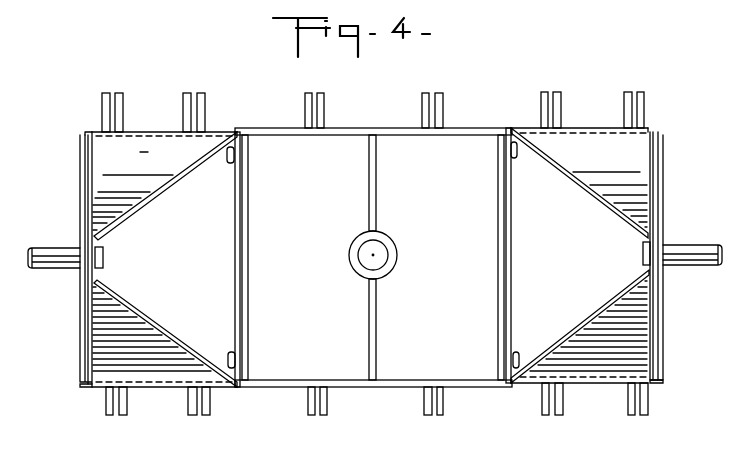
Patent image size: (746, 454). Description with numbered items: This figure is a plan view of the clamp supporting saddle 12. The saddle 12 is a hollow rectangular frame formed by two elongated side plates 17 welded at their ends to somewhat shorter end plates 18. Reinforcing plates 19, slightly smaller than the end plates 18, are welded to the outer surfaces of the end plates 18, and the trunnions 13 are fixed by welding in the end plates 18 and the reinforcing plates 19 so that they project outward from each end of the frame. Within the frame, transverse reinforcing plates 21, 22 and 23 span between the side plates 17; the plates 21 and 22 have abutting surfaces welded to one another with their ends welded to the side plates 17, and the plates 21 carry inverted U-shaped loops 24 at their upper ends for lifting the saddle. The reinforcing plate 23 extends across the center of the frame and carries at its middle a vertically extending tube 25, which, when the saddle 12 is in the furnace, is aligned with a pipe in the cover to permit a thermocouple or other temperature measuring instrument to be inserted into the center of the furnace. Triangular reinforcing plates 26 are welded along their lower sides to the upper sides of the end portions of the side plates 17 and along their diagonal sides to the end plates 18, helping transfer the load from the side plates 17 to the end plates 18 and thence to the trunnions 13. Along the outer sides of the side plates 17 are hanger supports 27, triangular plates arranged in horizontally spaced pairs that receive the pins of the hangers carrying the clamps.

The saddle 12 is at (700, 186).
The trunnions 13 is at (45, 262).
The side plates 17 is at (400, 134).
The end plates 18 is at (93, 386).
The reinforcing plates 19 is at (82, 332).
The transverse reinforcing plates 21 is at (235, 210).
The transverse reinforcing plates 22 is at (248, 204).
The reinforcing plate 23 is at (369, 192).
The inverted U-shaped loops 24 is at (227, 157).
The tube 25 is at (394, 251).
The triangular reinforcing plates 26 is at (148, 140).
The hanger supports 27 is at (118, 76).